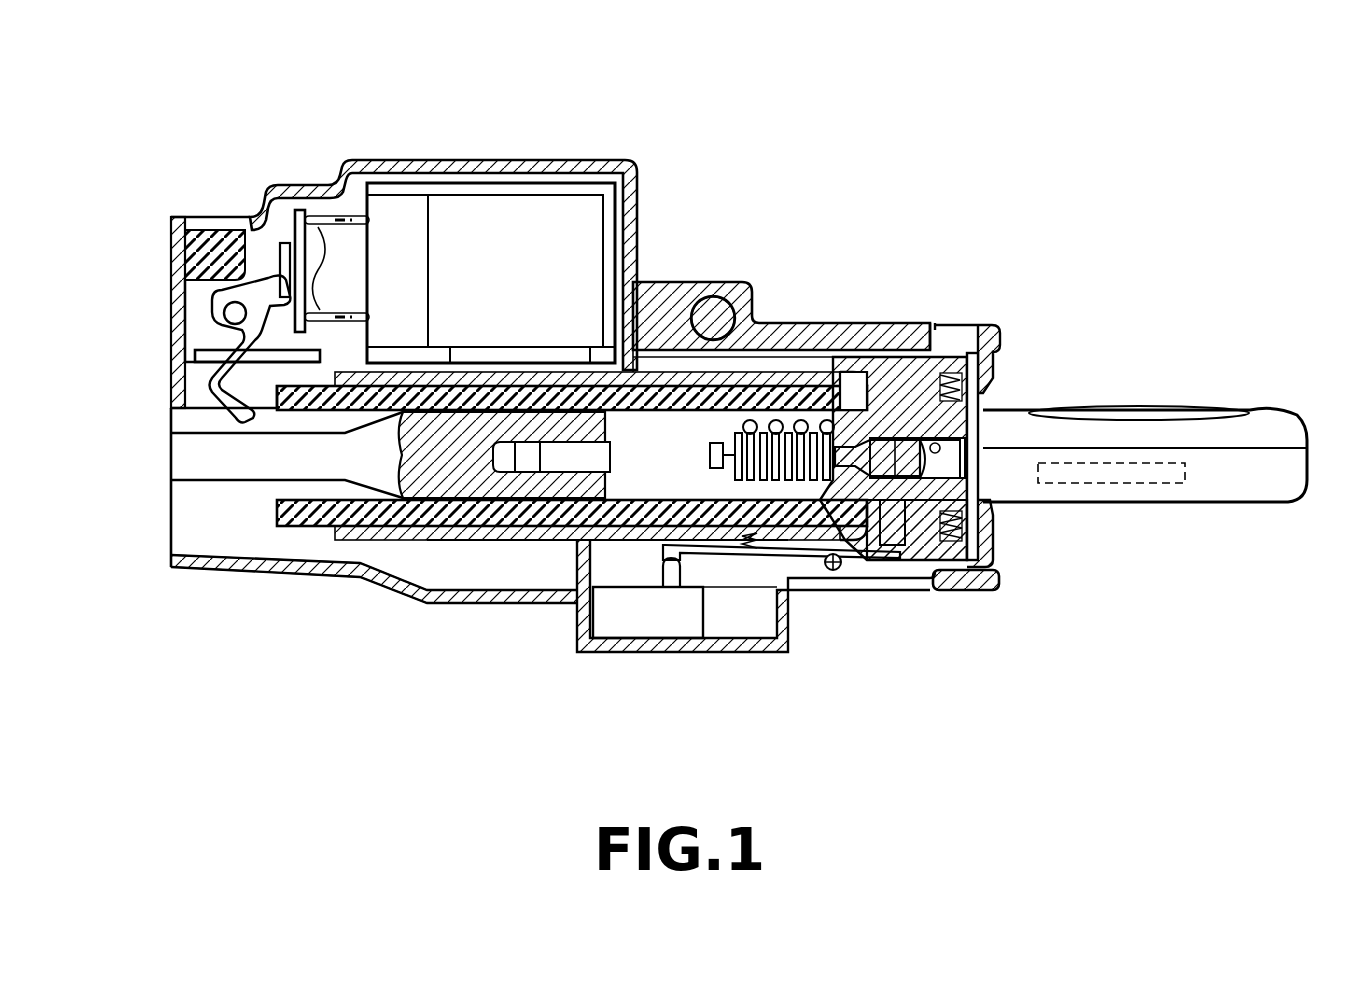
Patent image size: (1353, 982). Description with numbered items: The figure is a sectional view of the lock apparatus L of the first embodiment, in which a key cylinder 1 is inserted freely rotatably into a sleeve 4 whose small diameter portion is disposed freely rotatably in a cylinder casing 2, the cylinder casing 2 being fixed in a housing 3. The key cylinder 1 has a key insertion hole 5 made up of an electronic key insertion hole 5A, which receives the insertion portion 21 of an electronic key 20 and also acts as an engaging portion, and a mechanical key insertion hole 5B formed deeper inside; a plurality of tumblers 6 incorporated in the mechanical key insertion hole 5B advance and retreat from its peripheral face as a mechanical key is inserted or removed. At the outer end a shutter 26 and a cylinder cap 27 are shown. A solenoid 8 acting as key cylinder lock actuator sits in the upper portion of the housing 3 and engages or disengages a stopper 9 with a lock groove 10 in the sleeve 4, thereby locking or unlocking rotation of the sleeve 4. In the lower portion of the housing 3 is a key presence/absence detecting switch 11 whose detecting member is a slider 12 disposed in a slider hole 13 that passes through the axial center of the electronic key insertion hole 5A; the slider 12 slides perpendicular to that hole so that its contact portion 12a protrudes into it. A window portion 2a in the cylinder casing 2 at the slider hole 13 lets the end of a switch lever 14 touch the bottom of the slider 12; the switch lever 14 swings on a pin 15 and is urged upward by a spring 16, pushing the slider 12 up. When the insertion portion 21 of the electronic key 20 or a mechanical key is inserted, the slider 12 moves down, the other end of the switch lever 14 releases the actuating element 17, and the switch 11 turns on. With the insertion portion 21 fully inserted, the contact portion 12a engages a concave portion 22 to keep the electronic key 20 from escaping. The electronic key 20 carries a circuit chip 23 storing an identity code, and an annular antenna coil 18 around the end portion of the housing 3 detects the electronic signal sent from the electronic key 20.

The lock apparatus L is at (845, 165).
The key cylinder 1 is at (677, 420).
The cylinder casing 2 is at (495, 560).
The window portion 2a is at (948, 592).
The housing 3 is at (713, 295).
The sleeve 4 is at (318, 562).
The key insertion hole 5 is at (928, 243).
The electronic key insertion hole 5A is at (910, 445).
The mechanical key insertion hole 5B is at (827, 400).
The tumblers 6 is at (716, 468).
The solenoid 8 is at (468, 207).
The stopper 9 is at (212, 386).
The lock groove 10 is at (296, 437).
The key presence/absence detecting switch 11 is at (650, 625).
The slider 12 is at (903, 580).
The contact portion 12a is at (1000, 470).
The slider hole 13 is at (875, 562).
The switch lever 14 is at (722, 600).
The pin 15 is at (830, 575).
The spring 16 is at (750, 552).
The actuating element 17 is at (660, 573).
The antenna coil 18 is at (988, 333).
The electronic key 20 is at (1170, 403).
The insertion portion 21 is at (1005, 414).
The concave portion 22 is at (910, 443).
The circuit chip 23 is at (1105, 463).
The shutter 26 is at (985, 505).
The cylinder cap 27 is at (1000, 383).